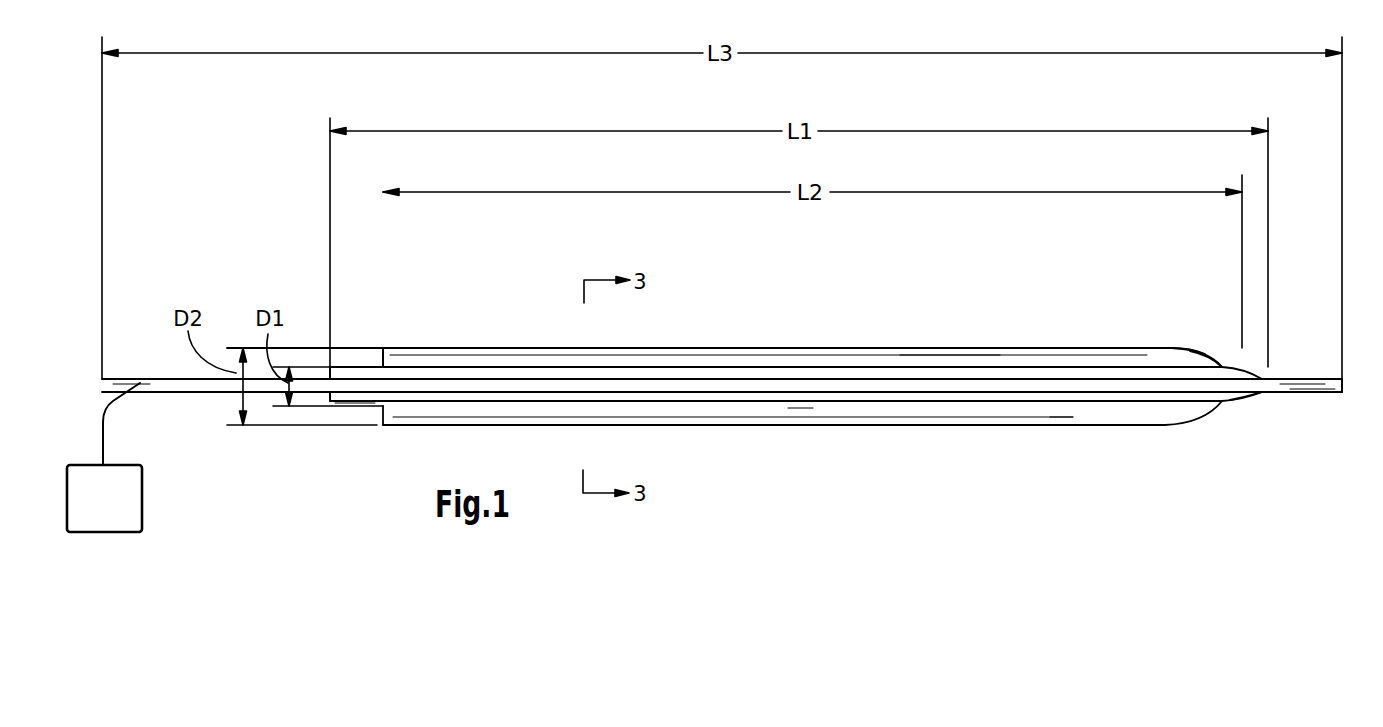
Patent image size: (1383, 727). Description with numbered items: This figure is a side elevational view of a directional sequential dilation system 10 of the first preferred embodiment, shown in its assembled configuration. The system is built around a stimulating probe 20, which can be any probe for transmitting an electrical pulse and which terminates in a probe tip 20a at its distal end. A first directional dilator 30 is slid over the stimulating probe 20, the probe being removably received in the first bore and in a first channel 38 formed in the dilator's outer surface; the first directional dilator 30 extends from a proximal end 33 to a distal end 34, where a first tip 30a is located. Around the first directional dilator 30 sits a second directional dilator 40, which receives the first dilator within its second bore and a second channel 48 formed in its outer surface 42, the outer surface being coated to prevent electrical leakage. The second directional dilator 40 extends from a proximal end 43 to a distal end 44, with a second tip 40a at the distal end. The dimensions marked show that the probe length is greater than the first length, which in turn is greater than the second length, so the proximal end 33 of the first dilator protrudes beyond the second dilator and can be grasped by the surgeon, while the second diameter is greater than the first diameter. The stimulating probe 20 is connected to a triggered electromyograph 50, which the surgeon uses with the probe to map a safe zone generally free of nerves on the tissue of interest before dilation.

The directional sequential dilation system 10 is at (326, 311).
The stimulating probe 20 is at (182, 388).
The probe tip 20a is at (1344, 393).
The first directional dilator 30 is at (372, 398).
The first tip 30a is at (1263, 372).
The proximal end 33 is at (350, 366).
The distal end 34 is at (1256, 402).
The first channel 38 is at (947, 383).
The second directional dilator 40 is at (697, 413).
The second tip 40a is at (1217, 358).
The outer surface 42 is at (947, 356).
The proximal end 43 is at (393, 347).
The distal end 44 is at (1187, 348).
The second channel 48 is at (1097, 393).
The triggered electromyograph (EMG) 50 is at (130, 522).